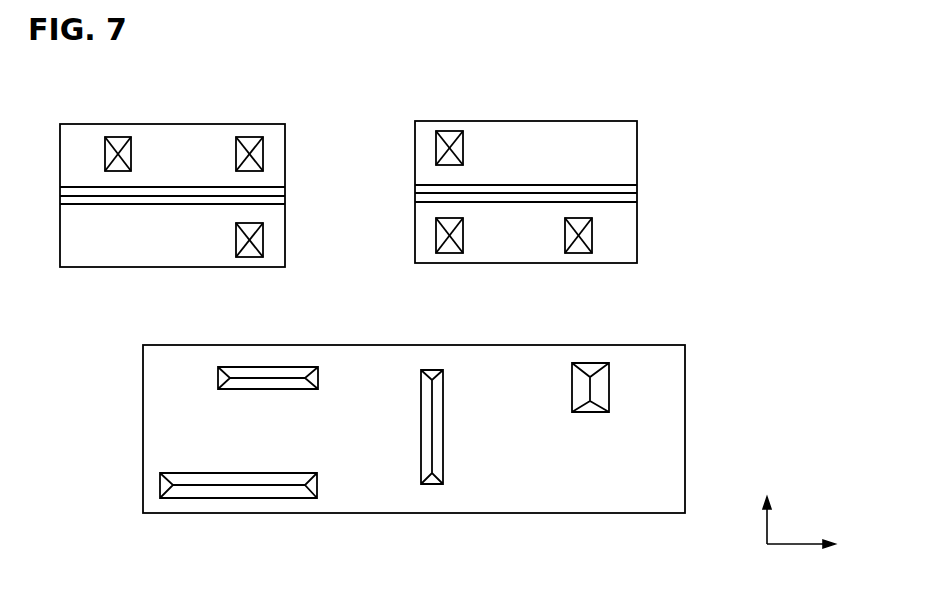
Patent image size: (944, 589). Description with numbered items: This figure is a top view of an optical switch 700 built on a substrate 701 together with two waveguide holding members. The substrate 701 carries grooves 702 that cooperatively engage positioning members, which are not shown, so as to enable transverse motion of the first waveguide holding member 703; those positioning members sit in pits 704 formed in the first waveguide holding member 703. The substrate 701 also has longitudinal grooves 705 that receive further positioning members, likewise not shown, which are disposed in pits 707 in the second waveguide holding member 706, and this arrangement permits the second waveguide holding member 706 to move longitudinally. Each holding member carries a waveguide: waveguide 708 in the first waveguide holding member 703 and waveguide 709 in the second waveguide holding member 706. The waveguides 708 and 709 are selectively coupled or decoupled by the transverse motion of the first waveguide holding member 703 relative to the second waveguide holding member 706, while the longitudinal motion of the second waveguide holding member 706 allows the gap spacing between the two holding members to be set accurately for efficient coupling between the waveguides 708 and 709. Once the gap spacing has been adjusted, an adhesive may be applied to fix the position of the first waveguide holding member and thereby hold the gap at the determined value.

The optical switch 700 is at (783, 120).
The substrate 701 is at (676, 358).
The grooves 702 is at (430, 375).
The first waveguide holding member 703 is at (565, 121).
The pits 704 is at (447, 131).
The longitudinal grooves 705 is at (273, 371).
The second waveguide holding member 706 is at (185, 124).
The pits 707 is at (113, 137).
The waveguide 708 is at (628, 178).
The waveguide 709 is at (60, 190).